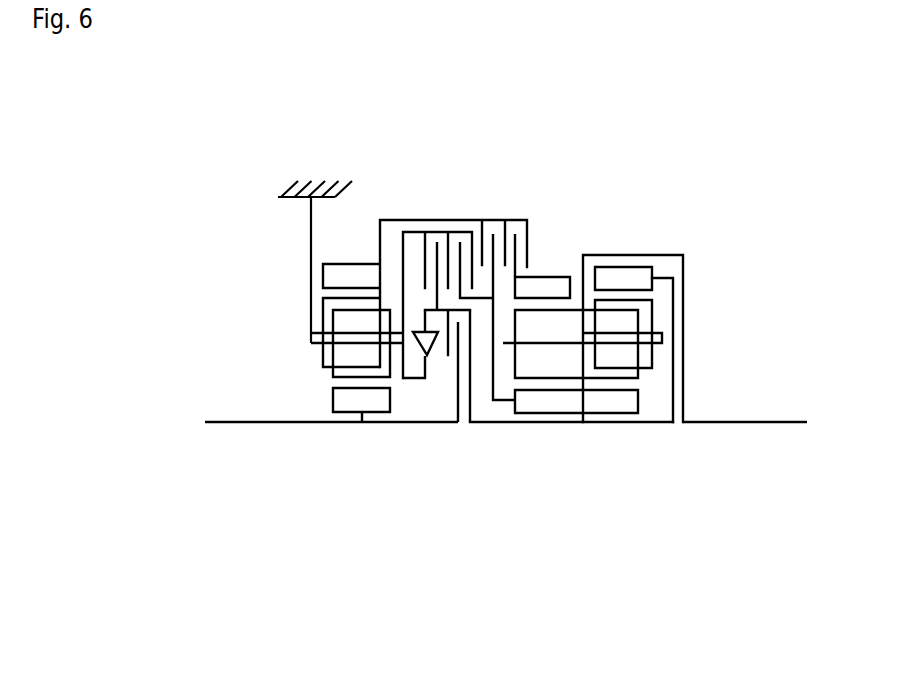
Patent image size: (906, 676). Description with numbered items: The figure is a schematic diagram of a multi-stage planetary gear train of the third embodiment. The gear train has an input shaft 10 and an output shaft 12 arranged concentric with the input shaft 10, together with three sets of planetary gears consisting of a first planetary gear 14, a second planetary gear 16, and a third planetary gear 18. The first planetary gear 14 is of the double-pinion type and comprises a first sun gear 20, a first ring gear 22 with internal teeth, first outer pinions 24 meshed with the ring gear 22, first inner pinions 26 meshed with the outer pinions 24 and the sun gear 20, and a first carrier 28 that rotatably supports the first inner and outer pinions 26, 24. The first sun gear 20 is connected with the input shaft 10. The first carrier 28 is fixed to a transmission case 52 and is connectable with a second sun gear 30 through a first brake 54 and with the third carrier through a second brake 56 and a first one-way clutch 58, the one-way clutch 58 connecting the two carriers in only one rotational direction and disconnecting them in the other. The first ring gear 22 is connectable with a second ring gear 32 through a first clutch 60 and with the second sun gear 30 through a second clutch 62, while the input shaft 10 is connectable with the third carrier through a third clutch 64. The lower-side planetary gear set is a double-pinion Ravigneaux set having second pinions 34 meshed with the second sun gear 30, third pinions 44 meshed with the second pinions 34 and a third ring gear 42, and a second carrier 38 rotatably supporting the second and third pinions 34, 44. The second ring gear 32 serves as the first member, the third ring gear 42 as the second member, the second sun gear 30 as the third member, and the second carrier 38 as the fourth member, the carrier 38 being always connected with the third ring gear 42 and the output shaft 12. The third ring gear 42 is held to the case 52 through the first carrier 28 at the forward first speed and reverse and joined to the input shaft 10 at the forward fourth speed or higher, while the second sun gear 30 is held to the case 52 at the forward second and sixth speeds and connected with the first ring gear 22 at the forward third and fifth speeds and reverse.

The input shaft 10 is at (243, 422).
The output shaft 12 is at (765, 422).
The first planetary gear 14 is at (322, 448).
The second planetary gear 16 is at (560, 449).
The third planetary gear 18 is at (664, 443).
The first sun gear 20 is at (352, 402).
The first ring gear 22 is at (345, 277).
The first outer pinions 24 is at (328, 318).
The first inner pinions 26 is at (340, 372).
The first carrier 28 is at (313, 340).
The second sun gear 30 is at (537, 403).
The second ring gear 32 is at (540, 283).
The second pinions 34 is at (567, 320).
The second carrier 38 is at (662, 338).
The third ring gear 42 is at (635, 283).
The third pinions 44 is at (645, 310).
The transmission case 52 is at (302, 188).
The first brake 54 is at (455, 238).
The second brake 56 is at (435, 242).
The first one-way clutch 58 is at (427, 355).
The first clutch 60 is at (520, 237).
The second clutch 62 is at (495, 232).
The third clutch 64 is at (463, 328).